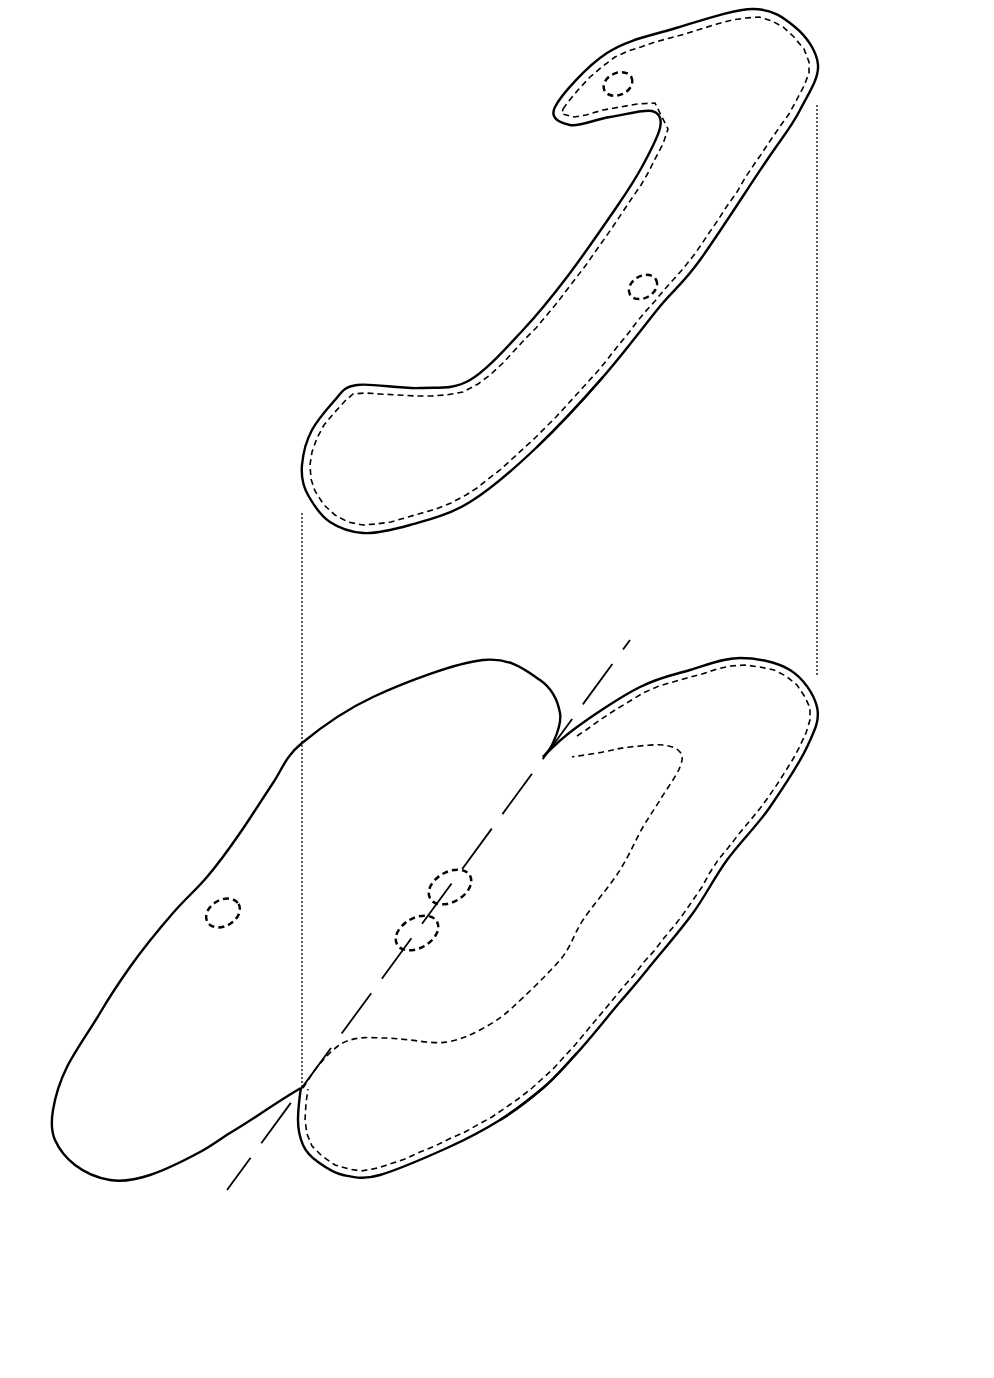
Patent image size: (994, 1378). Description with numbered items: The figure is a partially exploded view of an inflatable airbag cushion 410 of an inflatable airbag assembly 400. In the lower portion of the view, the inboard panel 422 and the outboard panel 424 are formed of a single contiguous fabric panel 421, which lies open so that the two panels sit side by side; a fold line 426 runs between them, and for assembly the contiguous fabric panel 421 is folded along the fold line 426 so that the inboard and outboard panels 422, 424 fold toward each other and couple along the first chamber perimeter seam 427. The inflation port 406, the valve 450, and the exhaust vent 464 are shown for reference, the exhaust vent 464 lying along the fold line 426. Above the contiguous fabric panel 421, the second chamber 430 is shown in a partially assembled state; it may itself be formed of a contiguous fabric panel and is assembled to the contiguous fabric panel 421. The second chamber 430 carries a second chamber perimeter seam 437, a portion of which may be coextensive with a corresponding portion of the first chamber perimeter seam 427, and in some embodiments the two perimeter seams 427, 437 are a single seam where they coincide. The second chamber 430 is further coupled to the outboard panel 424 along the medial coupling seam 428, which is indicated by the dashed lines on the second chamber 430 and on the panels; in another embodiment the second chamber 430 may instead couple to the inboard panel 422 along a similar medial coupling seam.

The inflatable airbag assembly 400 is at (228, 86).
The inflatable airbag cushion 410 is at (265, 202).
The valve 450 is at (610, 76).
The medial coupling seam 428 is at (603, 228).
The inflation port 406 is at (657, 286).
The second chamber perimeter seam 437 is at (607, 370).
The second chamber 430 is at (457, 465).
The inboard panel 422 is at (683, 892).
The exhaust vent 464 is at (443, 923).
The first chamber perimeter seam 427 is at (543, 1090).
The contiguous fabric panel 421 is at (490, 1173).
The outboard panel 424 is at (230, 1065).
The fold line 426 is at (245, 1163).